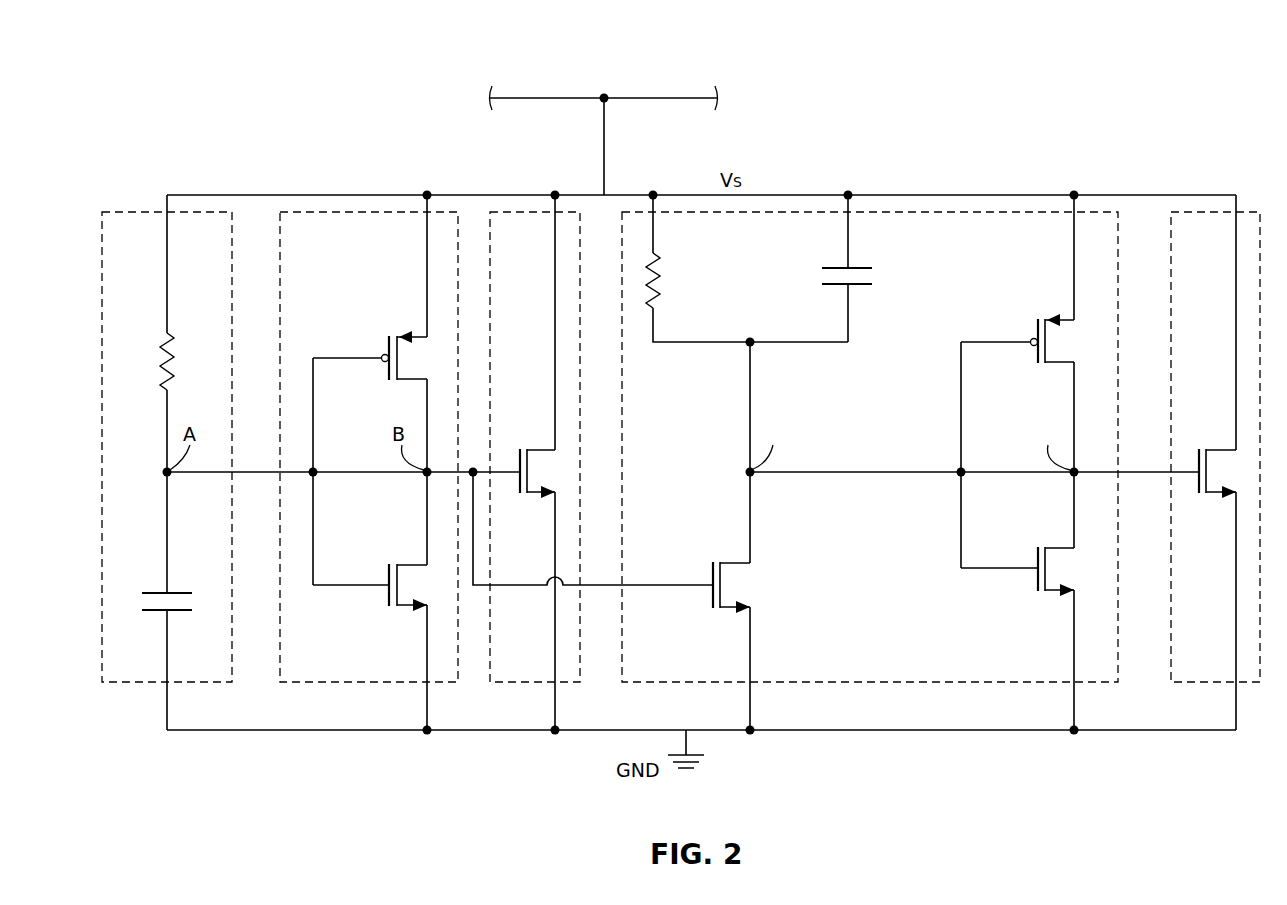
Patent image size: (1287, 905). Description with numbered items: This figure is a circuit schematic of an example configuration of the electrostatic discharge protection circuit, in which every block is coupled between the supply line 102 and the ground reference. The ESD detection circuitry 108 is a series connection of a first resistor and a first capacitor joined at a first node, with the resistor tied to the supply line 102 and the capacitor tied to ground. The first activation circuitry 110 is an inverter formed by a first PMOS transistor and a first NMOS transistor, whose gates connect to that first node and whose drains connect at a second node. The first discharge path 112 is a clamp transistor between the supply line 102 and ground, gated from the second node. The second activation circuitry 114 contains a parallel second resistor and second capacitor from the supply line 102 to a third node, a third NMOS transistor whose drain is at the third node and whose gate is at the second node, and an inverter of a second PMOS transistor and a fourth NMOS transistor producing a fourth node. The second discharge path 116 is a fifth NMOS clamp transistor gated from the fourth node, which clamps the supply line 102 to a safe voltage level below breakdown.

The supply line 102 is at (654, 97).
The ESD detection circuitry 108 is at (146, 207).
The first activation circuitry 110 is at (327, 212).
The first discharge path 112 is at (527, 212).
The second activation circuitry 114 is at (951, 212).
The second discharge path 116 is at (1208, 212).